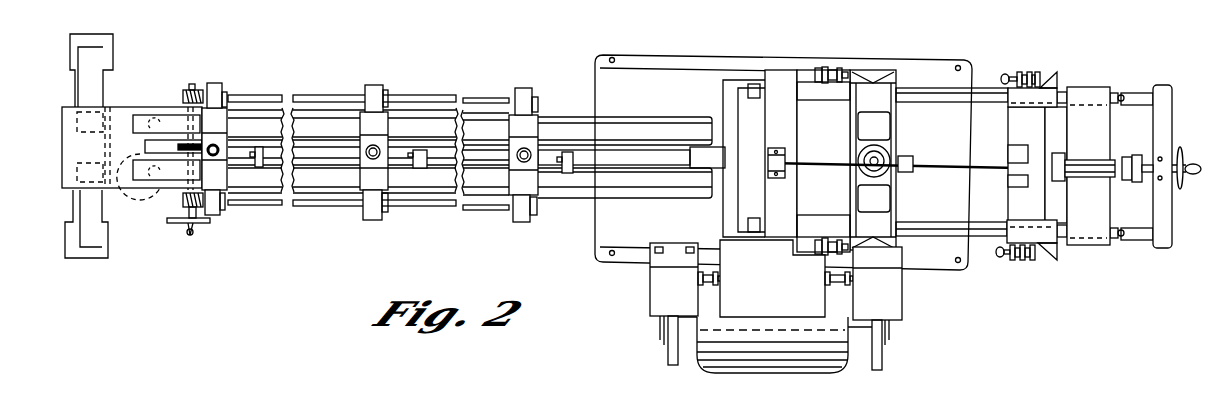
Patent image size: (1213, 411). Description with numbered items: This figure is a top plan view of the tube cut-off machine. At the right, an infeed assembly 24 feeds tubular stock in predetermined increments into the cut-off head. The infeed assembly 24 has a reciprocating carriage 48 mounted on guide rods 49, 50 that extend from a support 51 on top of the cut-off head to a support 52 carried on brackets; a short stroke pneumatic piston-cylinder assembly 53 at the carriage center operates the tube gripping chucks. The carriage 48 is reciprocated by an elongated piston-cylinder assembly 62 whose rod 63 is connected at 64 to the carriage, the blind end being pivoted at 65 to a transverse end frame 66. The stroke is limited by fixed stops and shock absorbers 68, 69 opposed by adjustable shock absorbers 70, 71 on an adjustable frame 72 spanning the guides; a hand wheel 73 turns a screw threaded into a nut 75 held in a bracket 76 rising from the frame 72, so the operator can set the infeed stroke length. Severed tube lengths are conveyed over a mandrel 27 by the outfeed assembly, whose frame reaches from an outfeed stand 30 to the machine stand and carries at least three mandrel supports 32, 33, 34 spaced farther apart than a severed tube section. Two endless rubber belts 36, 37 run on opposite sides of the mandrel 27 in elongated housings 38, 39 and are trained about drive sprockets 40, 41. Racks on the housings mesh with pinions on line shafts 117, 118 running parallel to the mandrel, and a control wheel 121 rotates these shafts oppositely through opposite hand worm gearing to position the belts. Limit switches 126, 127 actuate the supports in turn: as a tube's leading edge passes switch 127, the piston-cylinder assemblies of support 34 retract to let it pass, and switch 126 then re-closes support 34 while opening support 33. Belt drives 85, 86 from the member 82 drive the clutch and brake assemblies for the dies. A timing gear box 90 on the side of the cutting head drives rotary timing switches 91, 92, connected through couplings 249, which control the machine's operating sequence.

The infeed assembly 24 is at (1043, 263).
The mandrel assembly 27 is at (615, 157).
The outfeed stand 30 is at (70, 207).
The mandrel support 32 is at (234, 118).
The mandrel support 33 is at (393, 123).
The mandrel support 34 is at (507, 130).
The endless rubber belt 36 is at (182, 137).
The endless rubber belt 37 is at (177, 153).
The elongated housing 38 is at (309, 125).
The elongated housing 39 is at (320, 177).
The upper jaw 40 is at (147, 116).
The drive sprocket 41 is at (137, 207).
The reciprocating carriage 48 is at (903, 139).
The guide rod 49 is at (993, 103).
The guide rod 50 is at (980, 237).
The support 51 is at (797, 140).
The support 52 is at (1102, 130).
The short stroke pneumatic piston-cylinder assembly 53 is at (857, 173).
The elongated piston-cylinder assembly 62 is at (1082, 178).
The rod 63 is at (940, 160).
The connection 64 is at (903, 173).
The pivot 65 is at (1150, 180).
The transverse end frame 66 is at (1162, 213).
The fixed stop and shock absorber 68 is at (838, 70).
The fixed stop and shock absorber 69 is at (830, 258).
The adjustable shock absorber 70 is at (1008, 74).
The adjustable shock absorber 71 is at (1003, 261).
The adjustable frame 72 is at (1010, 195).
The hand wheel 73 is at (1183, 147).
The nut 75 is at (1035, 182).
The bracket 76 is at (1015, 157).
The bellows 82 is at (793, 367).
The belt drive 85 is at (668, 362).
The belt drive 86 is at (880, 368).
The timing gear box 90 is at (752, 312).
The rotary timing switch 91 is at (648, 285).
The rotary timing switch 92 is at (903, 298).
The line shaft 117 is at (405, 208).
The line shaft 118 is at (437, 98).
The control wheel 121 is at (208, 224).
The limit switch 126 is at (425, 168).
The limit switch 127 is at (254, 147).
The coupling 249 is at (718, 283).